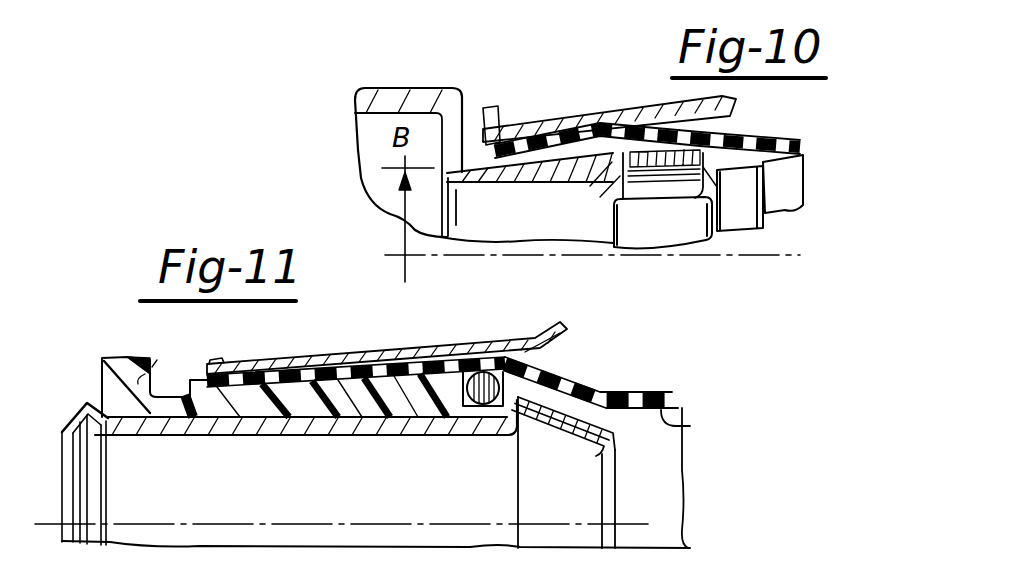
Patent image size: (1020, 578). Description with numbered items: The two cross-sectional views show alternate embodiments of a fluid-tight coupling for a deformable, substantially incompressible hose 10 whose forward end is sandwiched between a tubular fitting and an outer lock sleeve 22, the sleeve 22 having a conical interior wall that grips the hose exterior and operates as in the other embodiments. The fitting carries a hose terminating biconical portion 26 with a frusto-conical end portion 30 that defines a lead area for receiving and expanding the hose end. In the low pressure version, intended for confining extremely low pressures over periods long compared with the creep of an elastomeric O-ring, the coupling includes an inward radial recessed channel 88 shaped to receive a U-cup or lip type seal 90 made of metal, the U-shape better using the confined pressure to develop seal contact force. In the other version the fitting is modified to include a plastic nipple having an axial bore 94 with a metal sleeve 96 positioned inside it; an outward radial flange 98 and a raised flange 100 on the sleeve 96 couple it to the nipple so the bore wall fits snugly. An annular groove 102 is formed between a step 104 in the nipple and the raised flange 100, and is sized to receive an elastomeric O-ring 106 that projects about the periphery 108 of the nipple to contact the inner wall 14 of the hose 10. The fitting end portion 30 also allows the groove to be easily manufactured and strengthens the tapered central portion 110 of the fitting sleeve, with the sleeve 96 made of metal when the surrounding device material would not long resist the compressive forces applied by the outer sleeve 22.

In FIG. 10, the hose 10 is at (792, 134).
In FIG. 11, the hose 10 is at (648, 393).
In FIG. 11, the inner surface 14 is at (690, 426).
In FIG. 10, the outer lock sleeve 22 is at (561, 130).
In FIG. 10, the biconical portion 26 is at (528, 189).
In FIG. 11, the end portion 30 is at (607, 454).
In FIG. 10, the inward radial recessed channel 88 is at (643, 183).
In FIG. 10, the lip type seal 90 is at (612, 183).
In FIG. 11, the axial bore 94 is at (203, 437).
In FIG. 11, the metal sleeve 96 is at (163, 443).
In FIG. 11, the outward radial flange 98 is at (80, 408).
In FIG. 11, the raised flange 100 is at (519, 416).
In FIG. 11, the annular groove 102 is at (540, 366).
In FIG. 11, the step 104 is at (440, 412).
In FIG. 11, the O-ring 106 is at (490, 345).
In FIG. 11, the periphery 108 is at (252, 422).
In FIG. 11, the tapered central portion 110 is at (344, 407).